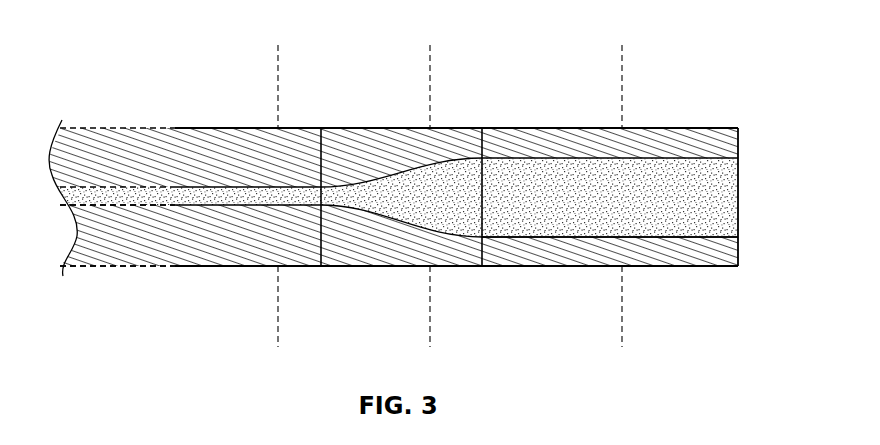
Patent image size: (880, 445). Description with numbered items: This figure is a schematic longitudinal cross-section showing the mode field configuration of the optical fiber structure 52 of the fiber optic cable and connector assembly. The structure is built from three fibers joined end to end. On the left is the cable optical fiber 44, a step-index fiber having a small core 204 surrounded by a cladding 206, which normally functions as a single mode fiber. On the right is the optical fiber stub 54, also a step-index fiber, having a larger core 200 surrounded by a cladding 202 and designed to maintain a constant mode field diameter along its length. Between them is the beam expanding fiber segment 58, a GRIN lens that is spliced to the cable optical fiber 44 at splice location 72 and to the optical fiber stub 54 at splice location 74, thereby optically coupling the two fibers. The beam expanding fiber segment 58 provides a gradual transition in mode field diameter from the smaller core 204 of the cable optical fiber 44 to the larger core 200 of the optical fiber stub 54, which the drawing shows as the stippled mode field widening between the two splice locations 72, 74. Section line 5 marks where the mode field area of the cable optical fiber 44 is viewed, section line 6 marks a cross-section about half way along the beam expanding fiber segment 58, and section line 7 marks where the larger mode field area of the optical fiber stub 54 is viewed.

The cable optical fiber 44 is at (212, 129).
The optical fiber structure 52 is at (232, 265).
The optical fiber stub 54 is at (648, 129).
The beam expanding fiber segment 58 is at (355, 265).
The splice location 72 is at (321, 127).
The splice location 74 is at (482, 127).
The core 200 is at (688, 157).
The cladding 202 is at (710, 264).
The core 204 is at (80, 208).
The cladding 206 is at (132, 242).
The section line 5- 5 is at (278, 45).
The section line 6- 6 is at (430, 45).
The section line 7- 7 is at (622, 45).